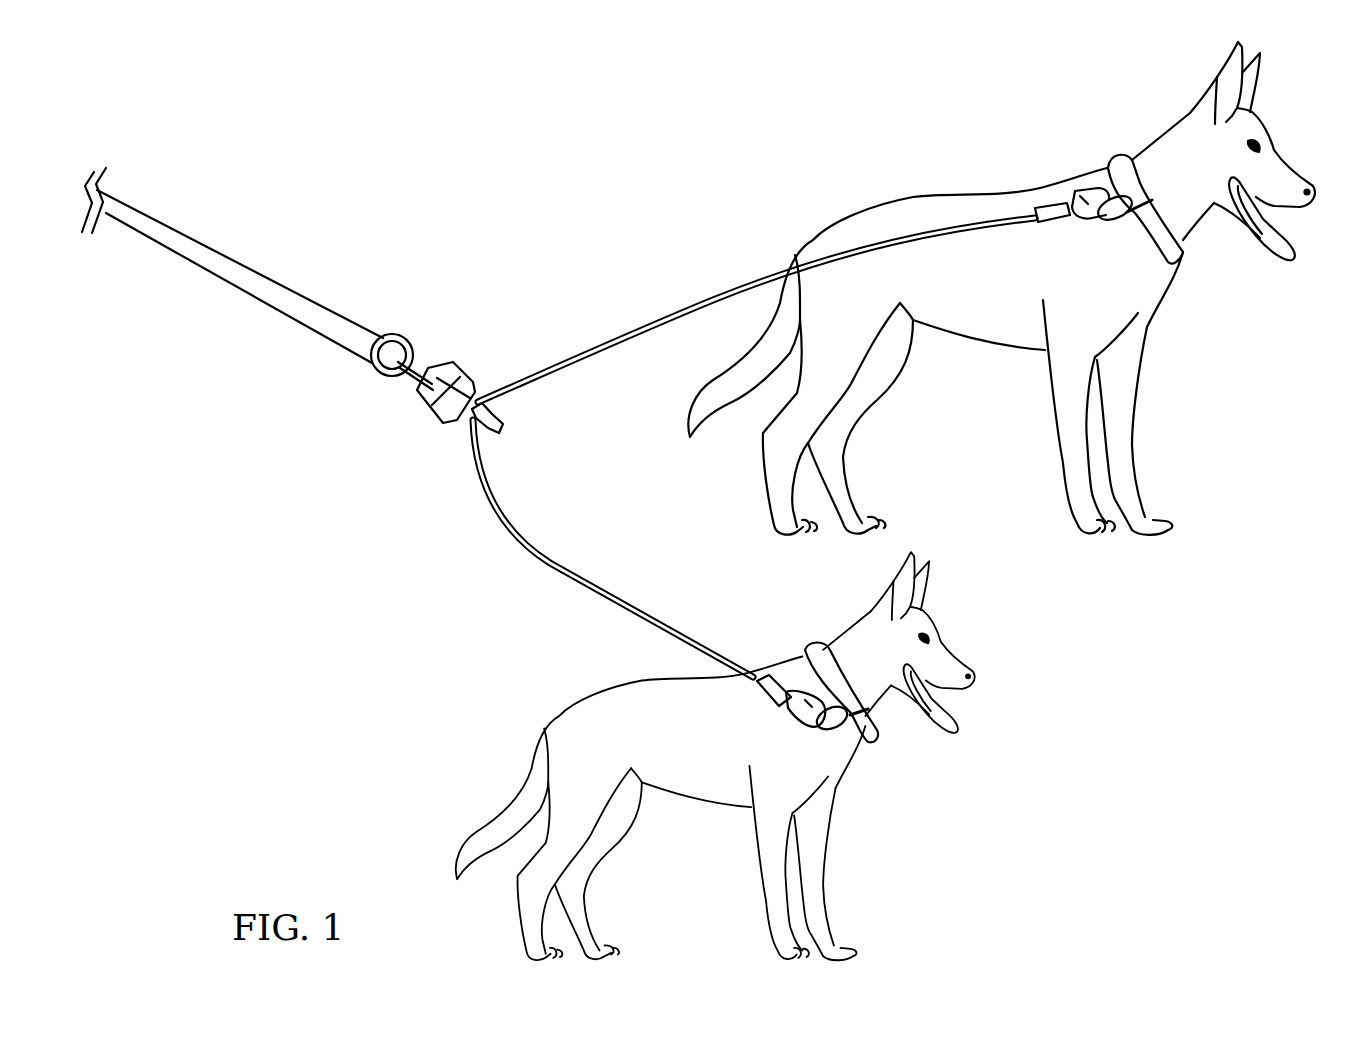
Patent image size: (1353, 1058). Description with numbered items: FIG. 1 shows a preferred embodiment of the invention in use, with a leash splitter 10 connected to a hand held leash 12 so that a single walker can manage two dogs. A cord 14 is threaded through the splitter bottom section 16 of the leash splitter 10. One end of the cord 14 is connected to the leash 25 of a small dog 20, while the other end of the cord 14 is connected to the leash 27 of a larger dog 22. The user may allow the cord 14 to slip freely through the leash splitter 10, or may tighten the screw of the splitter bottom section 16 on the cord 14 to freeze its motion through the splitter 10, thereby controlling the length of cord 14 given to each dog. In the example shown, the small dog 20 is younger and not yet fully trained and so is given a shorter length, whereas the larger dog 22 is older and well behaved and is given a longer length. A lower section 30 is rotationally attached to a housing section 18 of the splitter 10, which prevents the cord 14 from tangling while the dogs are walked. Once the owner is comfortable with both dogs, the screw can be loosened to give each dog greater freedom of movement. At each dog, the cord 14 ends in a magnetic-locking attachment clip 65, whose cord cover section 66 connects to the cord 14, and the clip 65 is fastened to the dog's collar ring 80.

The leash splitter 10 is at (477, 358).
The hand held leash 12 is at (268, 283).
The cord 14 is at (643, 323).
The splitter bottom section 16 is at (503, 418).
The housing section 18 is at (443, 358).
The small dog 20 is at (835, 783).
The larger dog 22 is at (1147, 327).
The leash of small dog 25 is at (805, 647).
The leash of larger dog 27 is at (1108, 165).
The lower section 30 is at (490, 432).
The magnetic-locking attachment clip 65 is at (773, 718).
The cord cover section 66 is at (1032, 208).
The collar ring 80 is at (842, 738).